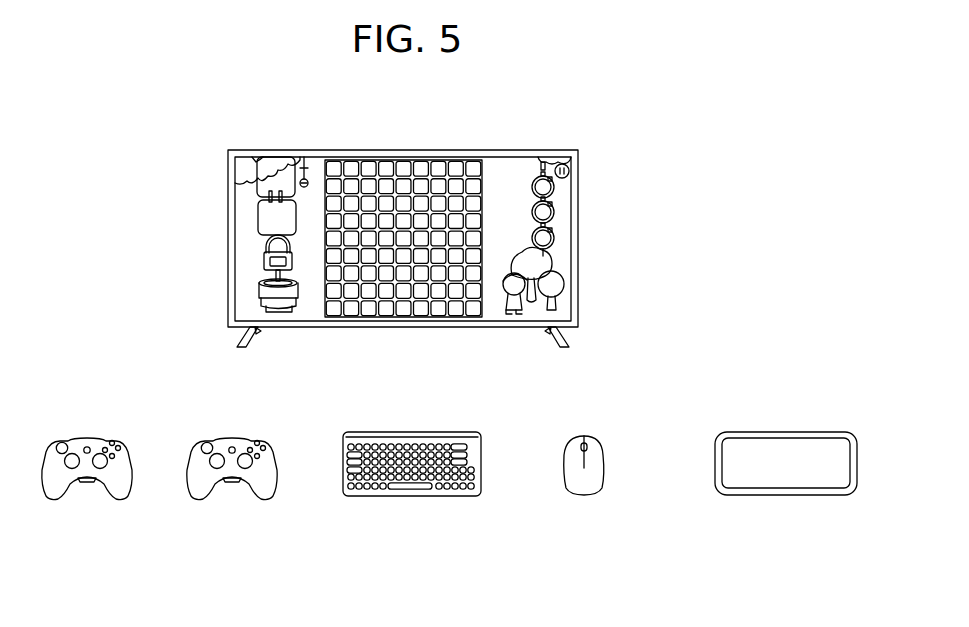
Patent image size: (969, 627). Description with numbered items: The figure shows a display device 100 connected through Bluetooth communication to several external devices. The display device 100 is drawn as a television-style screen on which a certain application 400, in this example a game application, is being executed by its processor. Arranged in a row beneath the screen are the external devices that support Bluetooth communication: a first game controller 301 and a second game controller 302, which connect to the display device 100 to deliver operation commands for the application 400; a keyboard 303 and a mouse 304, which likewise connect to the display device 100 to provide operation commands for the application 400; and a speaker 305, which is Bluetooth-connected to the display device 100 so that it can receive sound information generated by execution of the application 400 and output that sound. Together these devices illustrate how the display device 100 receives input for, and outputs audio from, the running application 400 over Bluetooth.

The display device 100 is at (361, 150).
The application 400 is at (568, 247).
The first game controller 301 is at (88, 503).
The second game controller 302 is at (232, 503).
The keyboard 303 is at (411, 503).
The mouse 304 is at (586, 503).
The speaker 305 is at (789, 503).